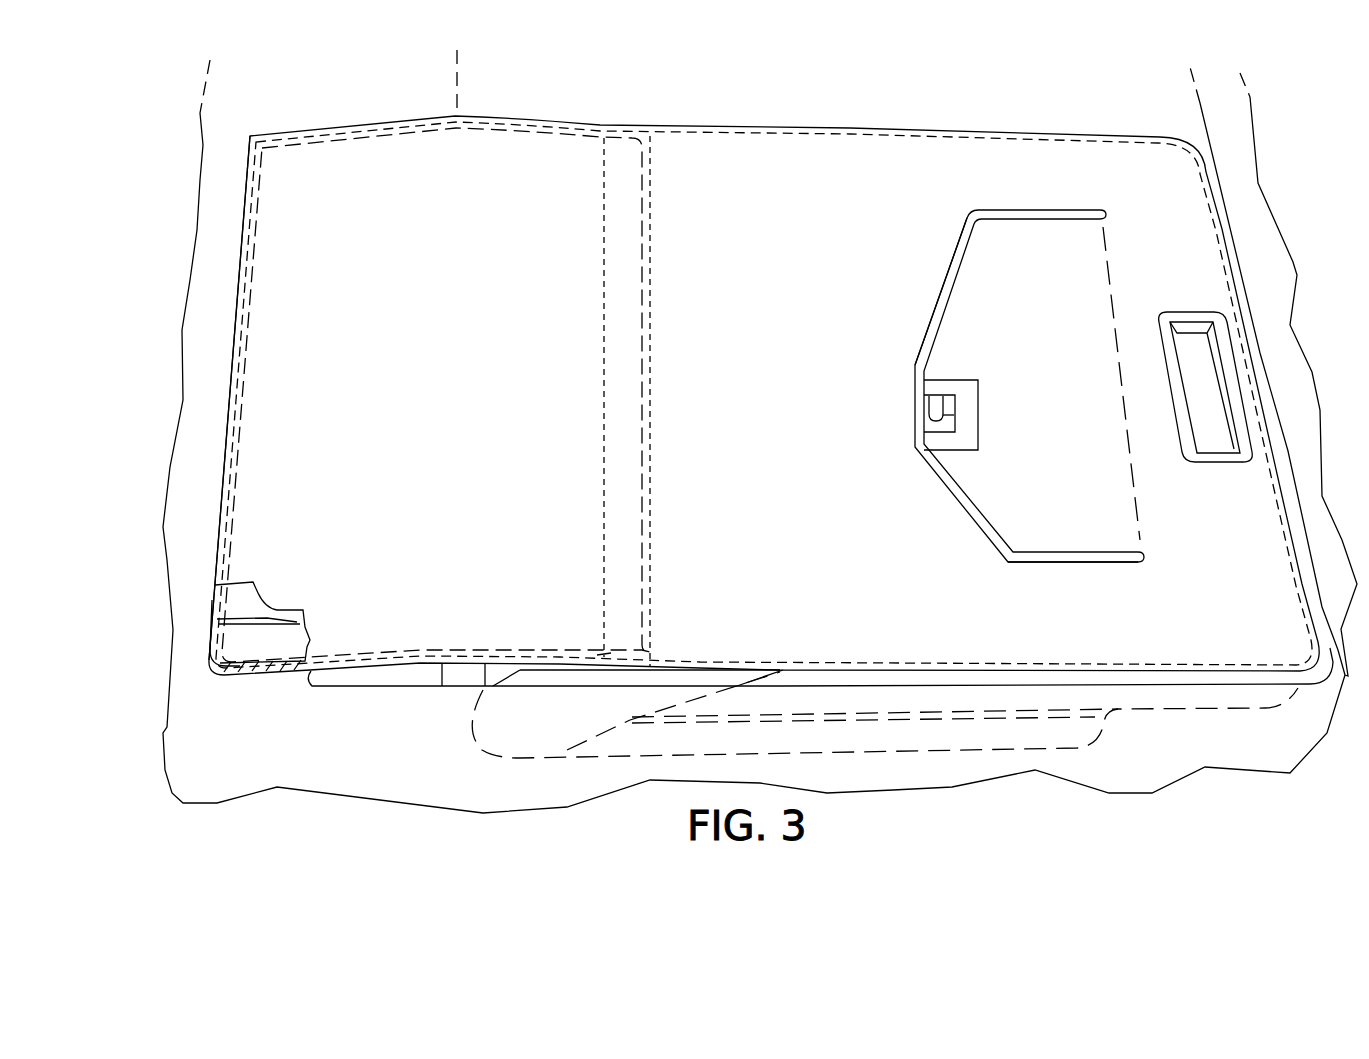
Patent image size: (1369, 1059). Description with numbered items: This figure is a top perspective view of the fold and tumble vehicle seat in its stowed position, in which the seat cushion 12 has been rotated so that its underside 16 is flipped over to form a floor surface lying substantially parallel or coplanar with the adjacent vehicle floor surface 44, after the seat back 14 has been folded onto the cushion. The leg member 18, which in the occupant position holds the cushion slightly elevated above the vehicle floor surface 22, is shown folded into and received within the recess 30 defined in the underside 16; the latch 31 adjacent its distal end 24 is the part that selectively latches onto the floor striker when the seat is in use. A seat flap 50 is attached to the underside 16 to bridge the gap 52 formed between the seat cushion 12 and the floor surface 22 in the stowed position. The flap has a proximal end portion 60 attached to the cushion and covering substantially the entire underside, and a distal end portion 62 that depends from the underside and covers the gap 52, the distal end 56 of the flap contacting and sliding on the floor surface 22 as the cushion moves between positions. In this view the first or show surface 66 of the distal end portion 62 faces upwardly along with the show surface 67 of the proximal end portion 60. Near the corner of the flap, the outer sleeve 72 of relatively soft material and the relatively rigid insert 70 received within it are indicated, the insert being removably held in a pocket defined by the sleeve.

The seat cushion 12 is at (1046, 127).
The seat back 14 is at (1039, 740).
The underside of the seat cushion 16 is at (890, 152).
The leg member 18 is at (1009, 519).
The vehicle floor surface 22 is at (307, 110).
The distal end of the leg member 24 is at (932, 440).
The recess 30 is at (913, 383).
The latch 31 is at (930, 410).
The adjacent vehicle floor surface 44 is at (1272, 270).
The seat flap 50 is at (359, 670).
The gap 52 is at (465, 677).
The distal end of the seat flap 56 is at (240, 222).
The proximal end portion 60 is at (760, 167).
The distal end portion 62 is at (497, 157).
The first surface 66 is at (463, 366).
The show surface 67 is at (776, 366).
The insert 70 is at (263, 647).
The outer sleeve 72 is at (257, 592).